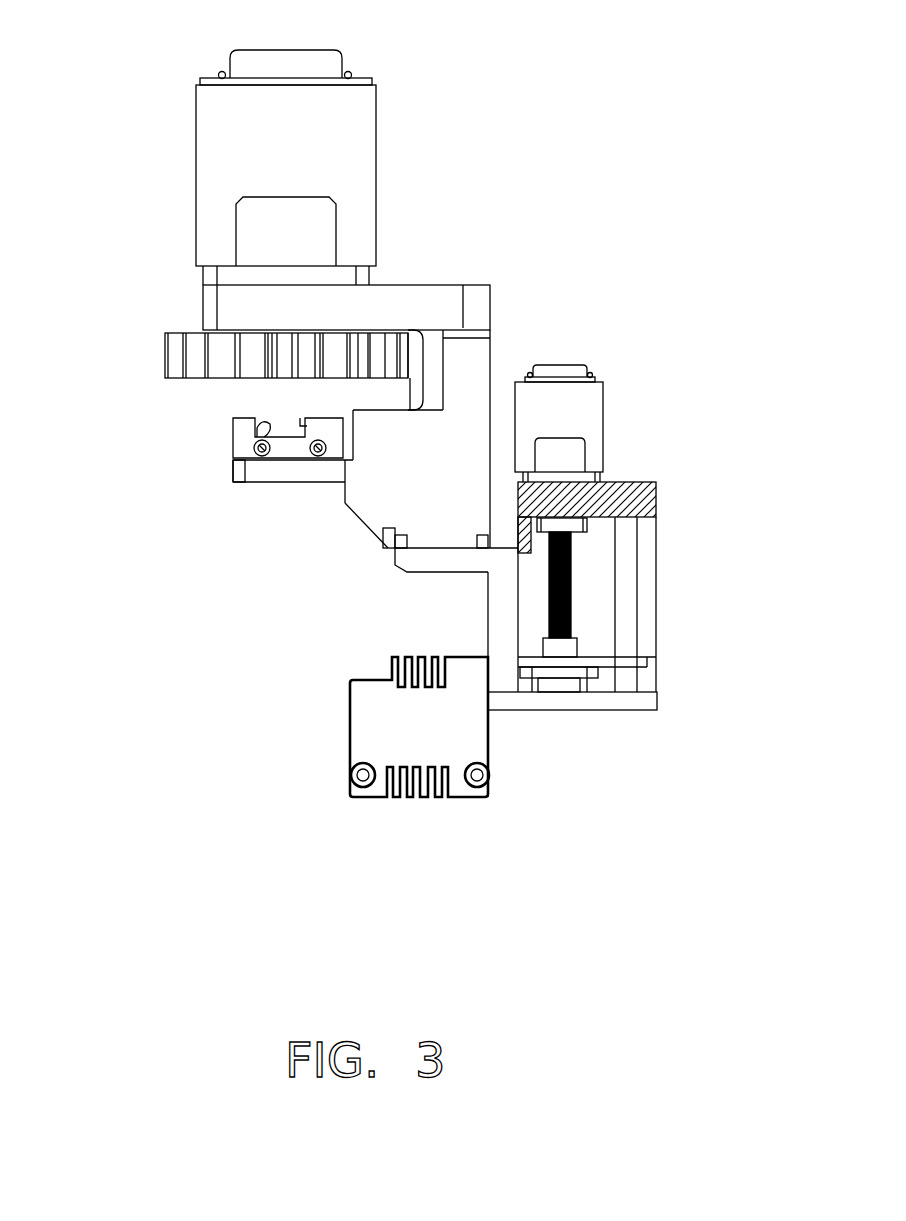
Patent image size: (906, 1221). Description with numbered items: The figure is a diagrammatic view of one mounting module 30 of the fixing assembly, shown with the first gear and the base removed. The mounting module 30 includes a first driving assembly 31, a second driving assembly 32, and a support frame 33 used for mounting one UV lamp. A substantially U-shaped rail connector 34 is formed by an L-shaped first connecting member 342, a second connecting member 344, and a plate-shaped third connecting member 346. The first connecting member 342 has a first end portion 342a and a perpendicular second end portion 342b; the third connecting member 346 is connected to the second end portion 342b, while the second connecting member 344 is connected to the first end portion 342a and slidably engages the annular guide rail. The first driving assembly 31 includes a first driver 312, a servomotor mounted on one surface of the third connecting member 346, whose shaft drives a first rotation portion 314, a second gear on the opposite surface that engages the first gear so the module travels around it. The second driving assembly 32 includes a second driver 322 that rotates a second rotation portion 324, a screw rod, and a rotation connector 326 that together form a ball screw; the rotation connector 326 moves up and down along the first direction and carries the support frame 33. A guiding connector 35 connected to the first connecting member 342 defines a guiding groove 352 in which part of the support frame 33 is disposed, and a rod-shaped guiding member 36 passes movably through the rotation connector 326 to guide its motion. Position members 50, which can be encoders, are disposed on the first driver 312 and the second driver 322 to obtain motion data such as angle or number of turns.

The mounting module 30 is at (574, 184).
The first driving assembly 31 is at (513, 178).
The first driver 312 is at (342, 162).
The first rotation portion 314 is at (365, 357).
The position member 50 is at (250, 67).
The rail connector 34 is at (78, 287).
The first connecting member 342 is at (405, 477).
The first end portion 342a is at (262, 477).
The second end portion 342b is at (473, 350).
The second connecting member 344 is at (280, 447).
The third connecting member 346 is at (228, 303).
The second driving assembly 32 is at (727, 383).
The second driver 322 is at (582, 415).
The second rotation portion 324 is at (573, 560).
The rotation connector 326 is at (562, 650).
The guiding groove 352 is at (652, 637).
The guiding connector 35 is at (647, 703).
The guiding member 36 is at (625, 678).
The support frame 33 is at (383, 737).